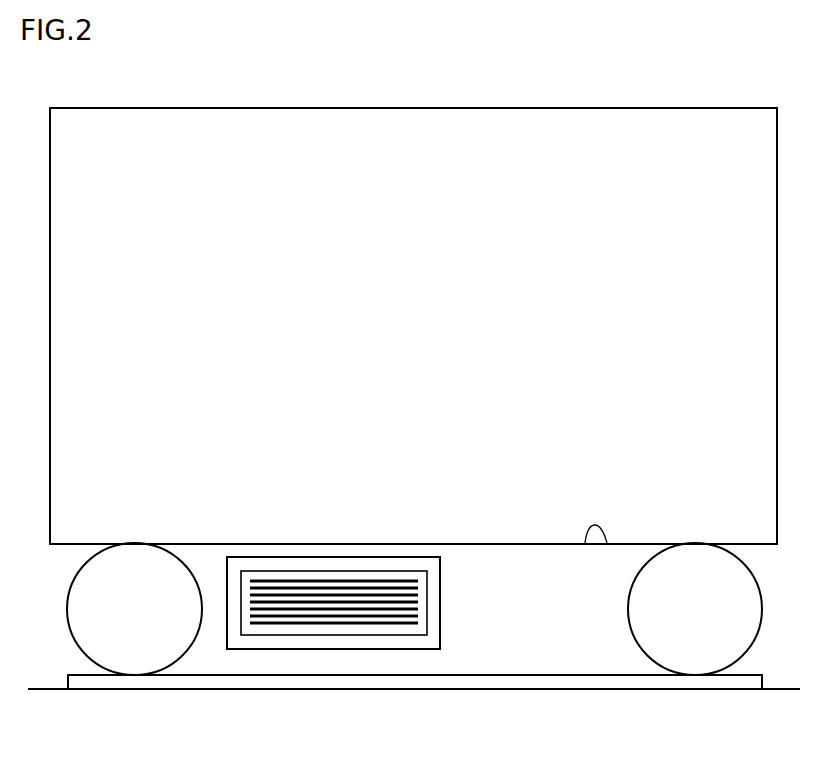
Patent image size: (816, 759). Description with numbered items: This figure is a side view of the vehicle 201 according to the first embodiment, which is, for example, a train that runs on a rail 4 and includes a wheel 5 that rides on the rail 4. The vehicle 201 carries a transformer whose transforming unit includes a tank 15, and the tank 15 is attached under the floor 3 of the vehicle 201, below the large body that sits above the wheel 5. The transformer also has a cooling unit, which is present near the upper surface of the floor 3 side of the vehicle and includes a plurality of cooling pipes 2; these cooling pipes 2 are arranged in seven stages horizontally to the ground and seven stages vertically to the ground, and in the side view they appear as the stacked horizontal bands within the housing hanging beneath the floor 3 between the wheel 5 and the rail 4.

The vehicle 201 is at (723, 92).
The tank 15 is at (352, 649).
The cooling pipes 2 is at (379, 579).
The floor 3 is at (585, 543).
The rail 4 is at (634, 680).
The wheel 5 is at (701, 652).